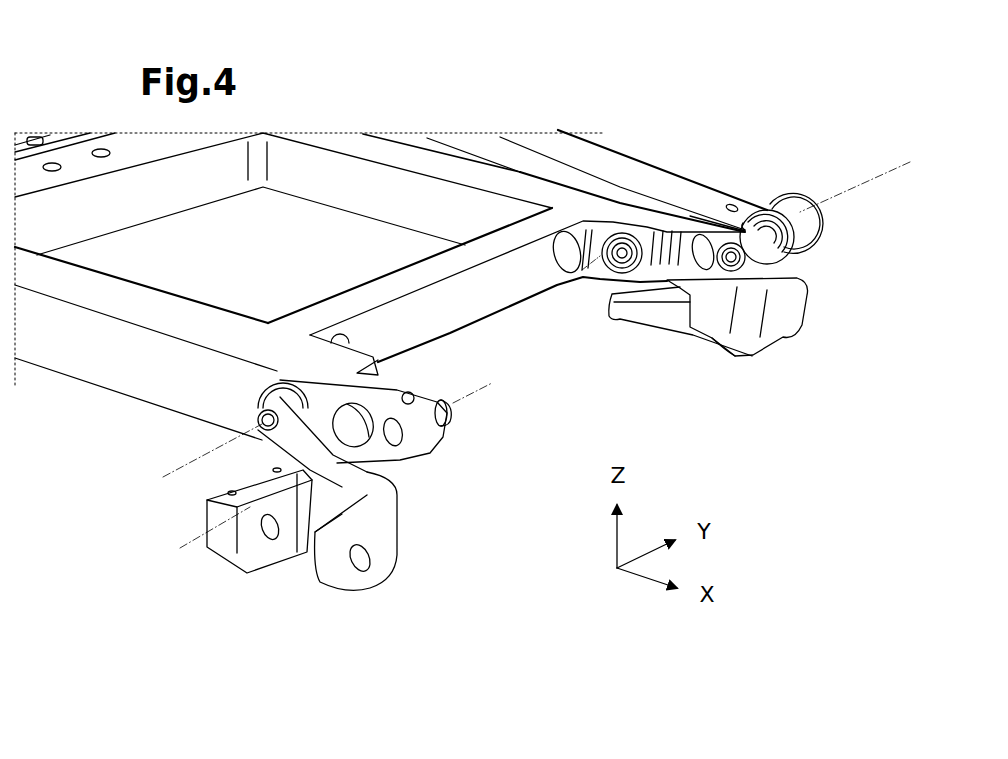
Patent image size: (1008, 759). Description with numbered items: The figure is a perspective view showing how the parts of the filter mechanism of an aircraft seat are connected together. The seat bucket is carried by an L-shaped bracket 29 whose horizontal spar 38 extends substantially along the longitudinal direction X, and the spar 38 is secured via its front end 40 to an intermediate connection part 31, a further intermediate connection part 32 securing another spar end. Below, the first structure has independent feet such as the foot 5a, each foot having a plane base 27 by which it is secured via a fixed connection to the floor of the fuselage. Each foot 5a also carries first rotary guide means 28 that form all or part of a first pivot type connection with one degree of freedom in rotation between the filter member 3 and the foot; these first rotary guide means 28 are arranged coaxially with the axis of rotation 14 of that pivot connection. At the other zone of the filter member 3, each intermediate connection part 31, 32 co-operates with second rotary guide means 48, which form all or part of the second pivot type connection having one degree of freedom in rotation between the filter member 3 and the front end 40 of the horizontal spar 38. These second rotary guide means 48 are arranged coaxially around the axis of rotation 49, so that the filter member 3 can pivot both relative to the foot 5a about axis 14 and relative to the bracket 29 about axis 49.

The filter member 3 is at (463, 312).
The foot 5a is at (731, 363).
The axis of rotation 14 is at (863, 190).
The plane base 27 is at (645, 350).
The first rotary guide means 28 is at (807, 230).
The L-shaped bracket 29 is at (636, 152).
The intermediate connection part 31 is at (783, 307).
The intermediate connection part 32 is at (397, 528).
The horizontal spar 38 is at (660, 183).
The front end 40 is at (710, 200).
The second rotary guide means 48 is at (280, 385).
The axis of rotation 49 is at (530, 297).